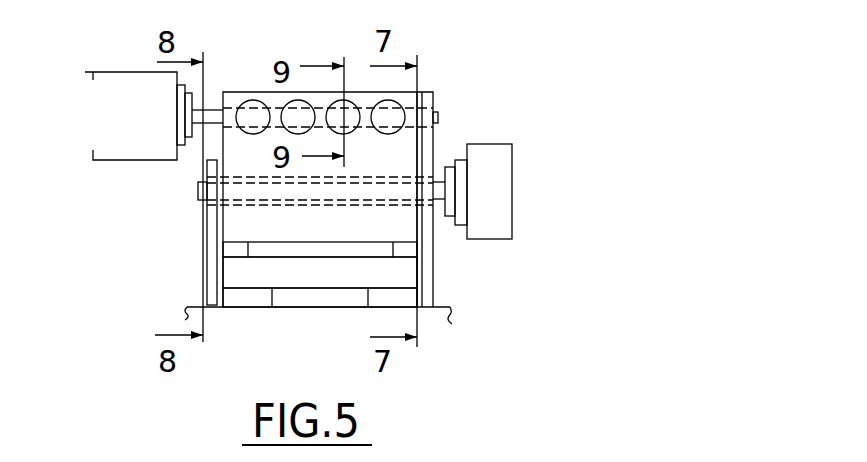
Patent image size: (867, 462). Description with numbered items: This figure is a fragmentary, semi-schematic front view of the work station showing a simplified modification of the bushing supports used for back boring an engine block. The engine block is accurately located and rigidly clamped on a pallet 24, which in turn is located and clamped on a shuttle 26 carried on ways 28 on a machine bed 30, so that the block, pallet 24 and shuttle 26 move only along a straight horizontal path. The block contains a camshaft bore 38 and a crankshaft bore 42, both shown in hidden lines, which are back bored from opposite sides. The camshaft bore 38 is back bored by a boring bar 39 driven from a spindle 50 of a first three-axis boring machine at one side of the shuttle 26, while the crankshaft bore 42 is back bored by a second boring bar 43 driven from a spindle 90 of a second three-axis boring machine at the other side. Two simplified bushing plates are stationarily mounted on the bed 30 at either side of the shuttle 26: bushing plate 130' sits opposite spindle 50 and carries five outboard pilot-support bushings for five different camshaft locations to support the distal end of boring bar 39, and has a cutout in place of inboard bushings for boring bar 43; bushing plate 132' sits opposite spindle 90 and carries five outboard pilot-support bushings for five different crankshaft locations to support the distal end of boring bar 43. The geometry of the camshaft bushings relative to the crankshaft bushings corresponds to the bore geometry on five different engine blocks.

The spindle 50 is at (110, 83).
The camshaft bore 38 is at (273, 98).
The bushing plate 130' is at (382, 170).
The boring bar 39 is at (438, 117).
The spindle 90 is at (500, 150).
The crankshaft bore 42 is at (262, 205).
The boring bar 43 is at (198, 184).
The bushing plate 132' is at (144, 232).
The pallet 24 is at (416, 247).
The shuttle 26 is at (416, 280).
The ways 28 is at (382, 300).
The machine bed 30 is at (435, 320).